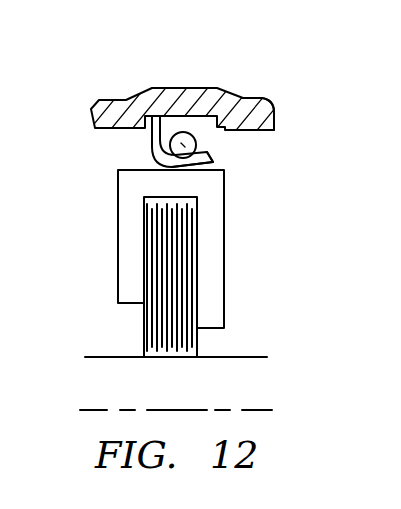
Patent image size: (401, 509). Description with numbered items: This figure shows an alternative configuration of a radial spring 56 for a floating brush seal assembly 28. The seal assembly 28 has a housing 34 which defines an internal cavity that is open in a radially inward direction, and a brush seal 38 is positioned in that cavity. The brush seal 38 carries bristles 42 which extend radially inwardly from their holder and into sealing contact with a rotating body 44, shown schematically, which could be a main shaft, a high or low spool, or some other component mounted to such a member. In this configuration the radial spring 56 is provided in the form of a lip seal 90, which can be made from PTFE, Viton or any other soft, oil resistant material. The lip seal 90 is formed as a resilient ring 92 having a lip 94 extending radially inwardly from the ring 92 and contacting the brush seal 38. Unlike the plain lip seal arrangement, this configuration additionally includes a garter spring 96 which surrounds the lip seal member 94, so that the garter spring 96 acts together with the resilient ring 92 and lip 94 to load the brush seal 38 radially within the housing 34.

The floating brush seal assembly 28 is at (240, 89).
The housing 34 is at (274, 114).
The brush seal 38 is at (108, 220).
The bristles 42 is at (158, 313).
The rotating body 44 is at (247, 356).
The radial spring 56 is at (138, 148).
The lip seal 90 is at (165, 128).
The resilient ring 92 is at (190, 132).
The lip 94 is at (185, 170).
The garter spring 96 is at (182, 145).